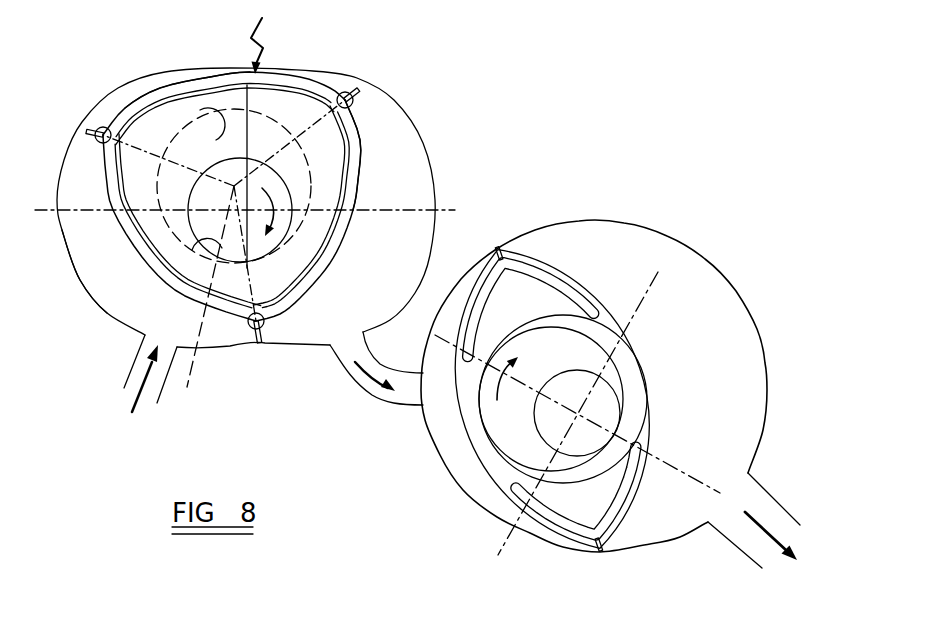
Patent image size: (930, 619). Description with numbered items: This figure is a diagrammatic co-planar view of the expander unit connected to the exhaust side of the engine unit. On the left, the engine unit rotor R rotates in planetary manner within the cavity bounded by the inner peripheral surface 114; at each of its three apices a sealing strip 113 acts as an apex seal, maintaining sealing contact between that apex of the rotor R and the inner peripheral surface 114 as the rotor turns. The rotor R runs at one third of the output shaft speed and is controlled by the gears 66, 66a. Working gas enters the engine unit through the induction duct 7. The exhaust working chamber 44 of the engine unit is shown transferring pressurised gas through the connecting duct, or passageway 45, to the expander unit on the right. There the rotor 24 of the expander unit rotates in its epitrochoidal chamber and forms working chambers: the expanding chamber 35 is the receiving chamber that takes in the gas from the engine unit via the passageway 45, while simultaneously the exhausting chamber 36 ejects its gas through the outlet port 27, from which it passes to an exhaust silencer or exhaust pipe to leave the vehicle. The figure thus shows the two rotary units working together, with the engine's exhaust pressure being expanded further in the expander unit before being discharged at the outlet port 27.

The induction duct 7 is at (131, 366).
The rotor 24 is at (503, 470).
The outlet port 27 is at (755, 537).
The expanding chamber 35 is at (457, 303).
The exhausting chamber 36 is at (702, 277).
The exhaust working chamber 44 is at (397, 167).
The connecting duct 45 is at (388, 406).
The gear 66 is at (187, 387).
The gear 66a is at (170, 73).
The sealing strip 113 is at (96, 133).
The inner peripheral surface 114 is at (82, 274).
The engine unit rotor R is at (378, 137).